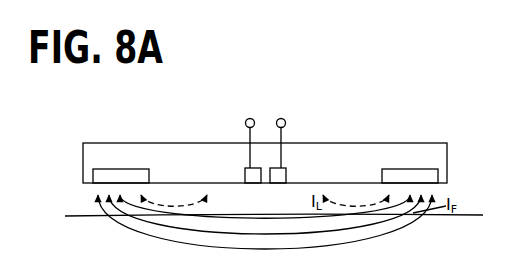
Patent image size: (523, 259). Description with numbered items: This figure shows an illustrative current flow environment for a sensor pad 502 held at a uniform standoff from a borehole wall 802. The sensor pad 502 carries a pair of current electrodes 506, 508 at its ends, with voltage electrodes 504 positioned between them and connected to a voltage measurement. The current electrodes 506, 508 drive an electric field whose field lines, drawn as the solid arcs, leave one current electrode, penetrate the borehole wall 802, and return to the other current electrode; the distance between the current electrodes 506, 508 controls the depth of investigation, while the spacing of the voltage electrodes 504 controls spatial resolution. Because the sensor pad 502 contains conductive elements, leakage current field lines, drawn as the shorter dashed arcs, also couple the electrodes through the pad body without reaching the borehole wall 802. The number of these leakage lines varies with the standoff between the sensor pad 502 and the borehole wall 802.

The sensor pad 502 is at (360, 143).
The voltage electrodes 504 is at (262, 182).
The current electrode 506 is at (93, 172).
The current electrode 508 is at (438, 172).
The borehole wall 802 is at (78, 218).